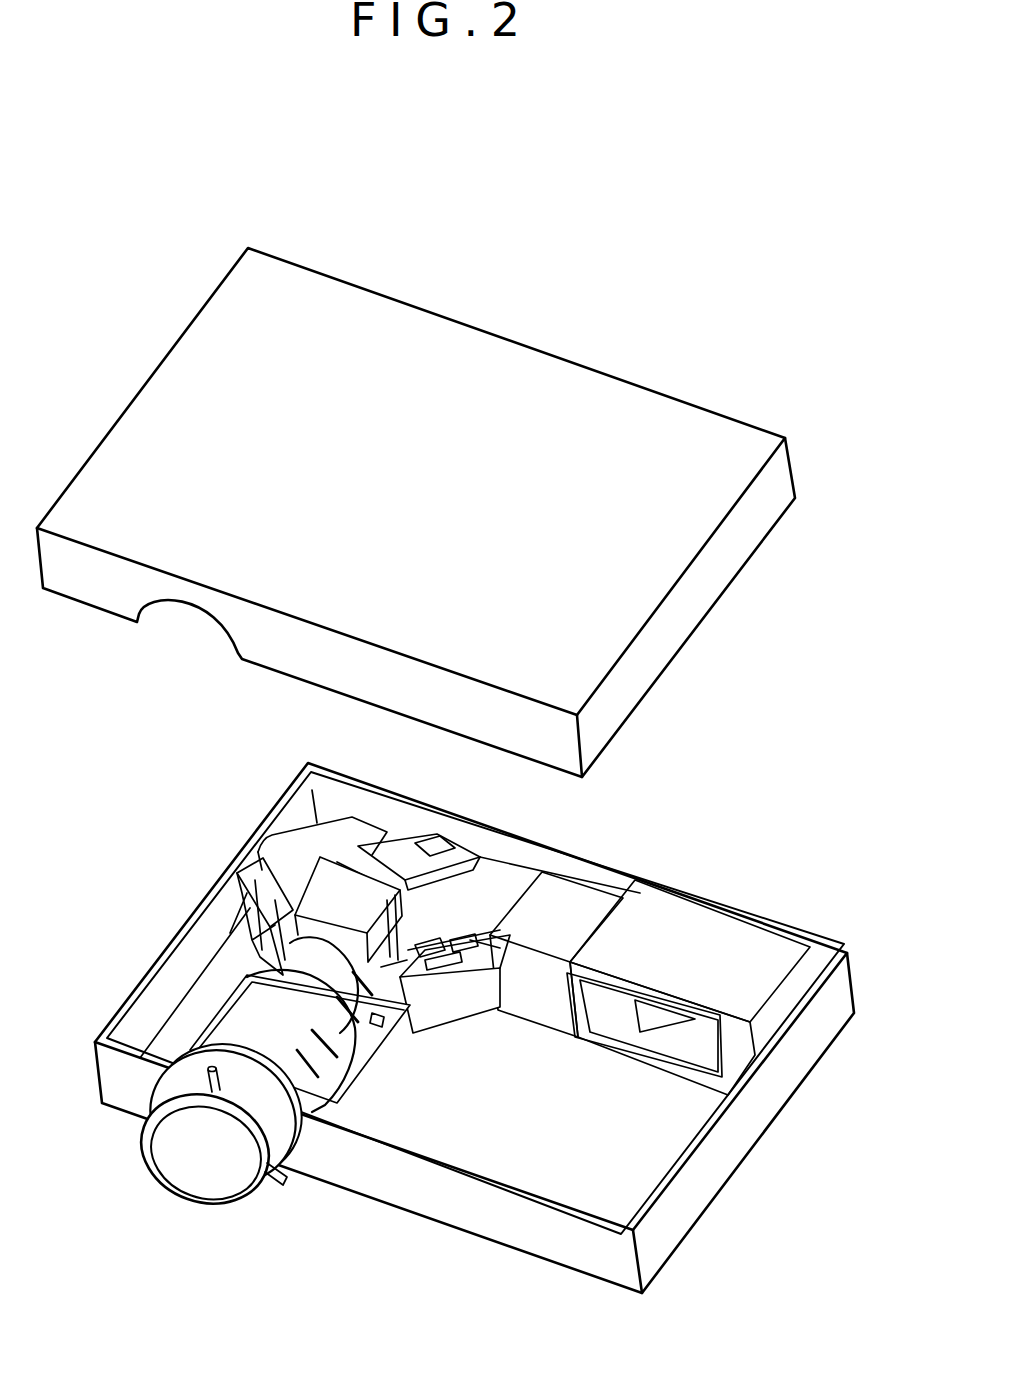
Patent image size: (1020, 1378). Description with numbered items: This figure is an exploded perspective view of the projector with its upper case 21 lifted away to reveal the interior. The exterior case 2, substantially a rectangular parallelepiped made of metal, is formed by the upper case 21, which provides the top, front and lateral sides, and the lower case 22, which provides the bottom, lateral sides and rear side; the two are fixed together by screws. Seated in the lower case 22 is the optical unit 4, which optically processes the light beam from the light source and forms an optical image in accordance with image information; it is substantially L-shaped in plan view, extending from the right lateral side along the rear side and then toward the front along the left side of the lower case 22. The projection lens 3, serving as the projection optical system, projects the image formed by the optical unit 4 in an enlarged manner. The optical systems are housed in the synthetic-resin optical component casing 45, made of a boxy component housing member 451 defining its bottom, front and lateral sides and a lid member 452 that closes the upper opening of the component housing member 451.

The exterior case 2 is at (342, 222).
The upper case 21 is at (488, 342).
The lower case 22 is at (808, 1033).
The projection lens 3 is at (163, 1167).
The optical unit 4 is at (629, 861).
The optical component casing 45 is at (564, 1062).
The component housing member 451 is at (458, 1012).
The lid member 452 is at (536, 930).